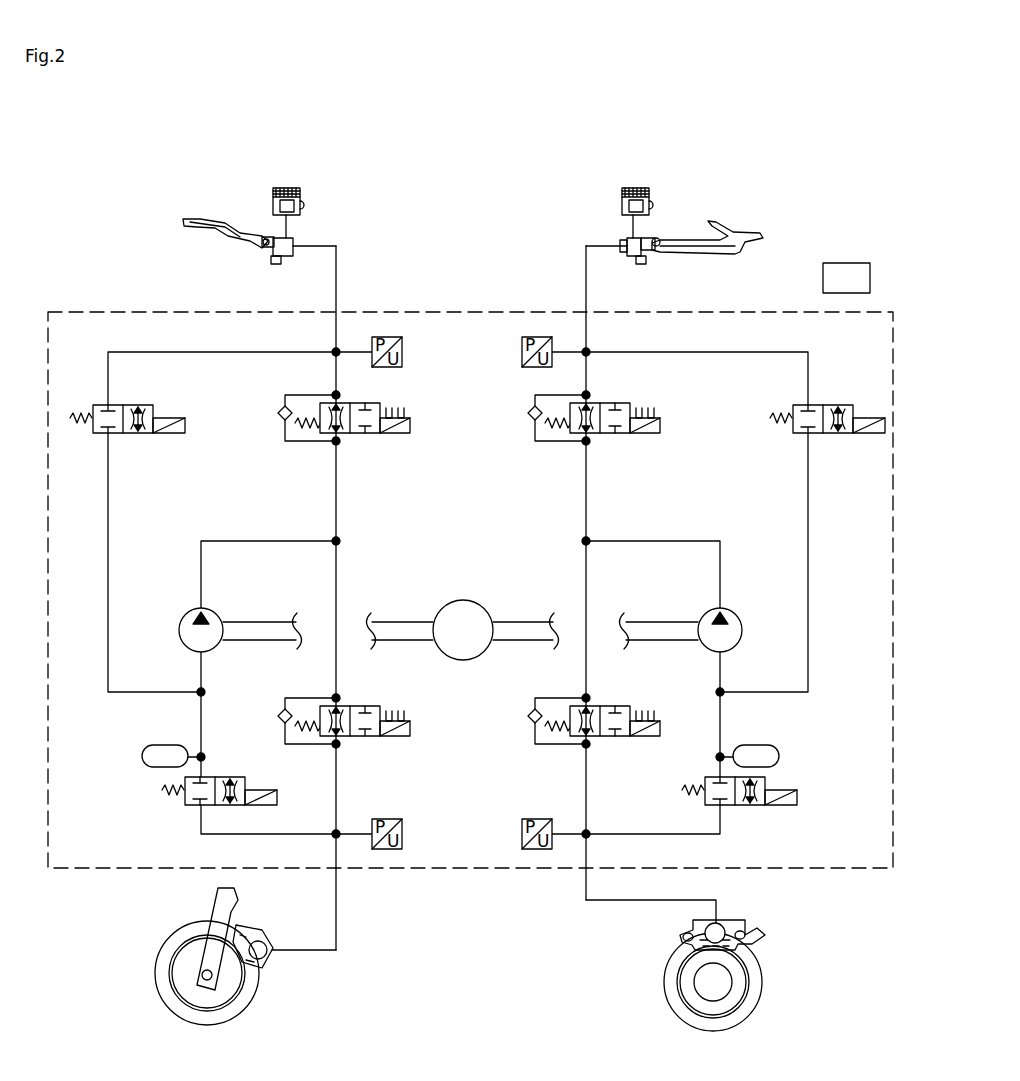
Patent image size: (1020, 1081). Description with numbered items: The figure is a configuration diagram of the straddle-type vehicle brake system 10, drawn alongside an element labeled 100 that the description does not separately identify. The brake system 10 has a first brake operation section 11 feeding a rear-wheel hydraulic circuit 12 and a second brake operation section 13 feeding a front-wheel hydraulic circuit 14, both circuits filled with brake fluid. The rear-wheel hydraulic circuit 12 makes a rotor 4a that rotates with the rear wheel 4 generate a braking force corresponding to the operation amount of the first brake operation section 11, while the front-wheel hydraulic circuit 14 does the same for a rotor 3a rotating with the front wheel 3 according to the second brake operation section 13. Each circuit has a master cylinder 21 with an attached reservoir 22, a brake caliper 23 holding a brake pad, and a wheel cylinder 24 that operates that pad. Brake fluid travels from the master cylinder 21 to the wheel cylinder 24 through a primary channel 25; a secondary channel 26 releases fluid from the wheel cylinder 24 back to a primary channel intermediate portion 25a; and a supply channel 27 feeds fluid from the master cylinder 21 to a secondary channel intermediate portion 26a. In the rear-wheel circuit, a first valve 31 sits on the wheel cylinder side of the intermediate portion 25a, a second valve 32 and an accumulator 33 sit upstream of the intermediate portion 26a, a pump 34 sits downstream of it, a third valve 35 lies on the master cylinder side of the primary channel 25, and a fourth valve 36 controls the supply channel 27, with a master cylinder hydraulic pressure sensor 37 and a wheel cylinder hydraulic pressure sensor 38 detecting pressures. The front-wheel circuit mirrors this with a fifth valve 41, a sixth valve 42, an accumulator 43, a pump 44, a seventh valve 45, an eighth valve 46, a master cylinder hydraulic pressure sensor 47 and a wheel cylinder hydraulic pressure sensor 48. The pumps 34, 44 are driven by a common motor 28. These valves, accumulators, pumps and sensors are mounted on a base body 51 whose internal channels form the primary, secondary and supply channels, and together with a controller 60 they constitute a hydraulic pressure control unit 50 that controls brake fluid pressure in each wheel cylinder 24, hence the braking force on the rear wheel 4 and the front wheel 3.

The brake system 100 is at (857, 131).
The straddle-type vehicle brake system 10 is at (116, 221).
The rear-wheel hydraulic circuit 12 is at (536, 180).
The front-wheel hydraulic circuit 14 is at (370, 180).
The second brake operation section 13 is at (200, 221).
The first brake operation section 11 is at (736, 232).
The reservoir 22 is at (294, 189).
The master cylinder 21 is at (284, 258).
The hydraulic pressure control unit 50 is at (810, 248).
The controller (ECU) 60 is at (862, 256).
The base body 51 is at (98, 308).
The primary channel 25 is at (335, 500).
The primary channel intermediate portion 25a is at (340, 543).
The secondary channel 26 is at (258, 541).
The secondary channel intermediate portion 26a is at (200, 690).
The supply channel 27 is at (206, 355).
The master cylinder hydraulic pressure sensor 47 is at (405, 352).
The master cylinder hydraulic pressure sensor 37 is at (520, 352).
The wheel cylinder hydraulic pressure sensor 48 is at (405, 834).
The wheel cylinder hydraulic pressure sensor 38 is at (520, 834).
The seventh valve (USV) 45 is at (393, 436).
The third valve (USV) 35 is at (655, 436).
The fifth valve (EV) 41 is at (374, 738).
The first valve (EV) 31 is at (622, 738).
The eighth valve (HSV) 46 is at (155, 435).
The fourth valve (HSV) 36 is at (830, 435).
The sixth valve (AV) 42 is at (236, 777).
The second valve (AV) 32 is at (756, 806).
The accumulator 43 is at (165, 745).
The accumulator 33 is at (760, 745).
The pump 44 is at (210, 652).
The pump 34 is at (712, 652).
The motor 28 is at (470, 661).
The front wheel 3 is at (262, 1001).
The rotor 3a is at (172, 999).
The rear wheel 4 is at (665, 1012).
The rotor 4a is at (742, 1012).
The brake caliper 23 is at (262, 935).
The wheel cylinder 24 is at (272, 946).